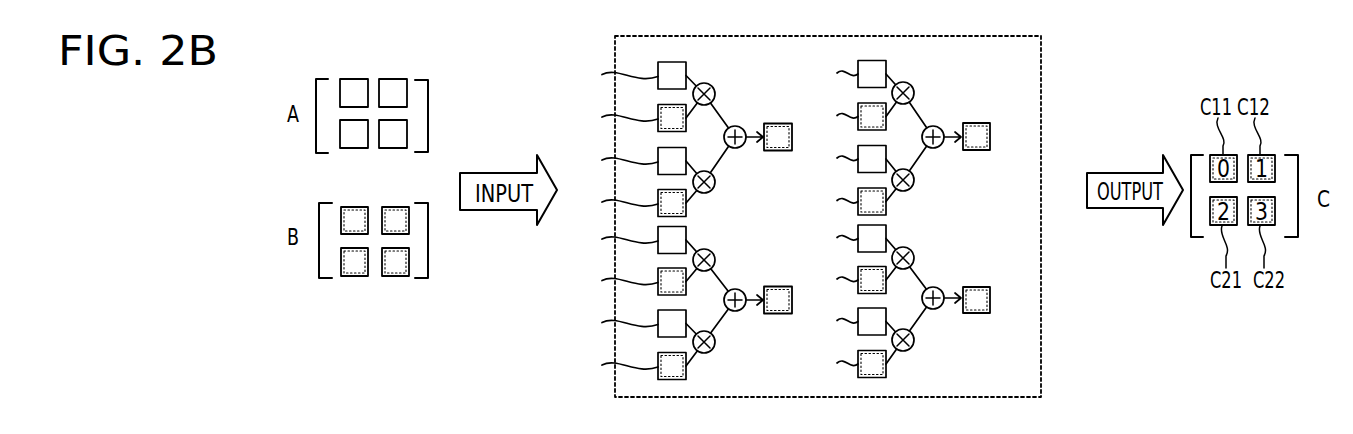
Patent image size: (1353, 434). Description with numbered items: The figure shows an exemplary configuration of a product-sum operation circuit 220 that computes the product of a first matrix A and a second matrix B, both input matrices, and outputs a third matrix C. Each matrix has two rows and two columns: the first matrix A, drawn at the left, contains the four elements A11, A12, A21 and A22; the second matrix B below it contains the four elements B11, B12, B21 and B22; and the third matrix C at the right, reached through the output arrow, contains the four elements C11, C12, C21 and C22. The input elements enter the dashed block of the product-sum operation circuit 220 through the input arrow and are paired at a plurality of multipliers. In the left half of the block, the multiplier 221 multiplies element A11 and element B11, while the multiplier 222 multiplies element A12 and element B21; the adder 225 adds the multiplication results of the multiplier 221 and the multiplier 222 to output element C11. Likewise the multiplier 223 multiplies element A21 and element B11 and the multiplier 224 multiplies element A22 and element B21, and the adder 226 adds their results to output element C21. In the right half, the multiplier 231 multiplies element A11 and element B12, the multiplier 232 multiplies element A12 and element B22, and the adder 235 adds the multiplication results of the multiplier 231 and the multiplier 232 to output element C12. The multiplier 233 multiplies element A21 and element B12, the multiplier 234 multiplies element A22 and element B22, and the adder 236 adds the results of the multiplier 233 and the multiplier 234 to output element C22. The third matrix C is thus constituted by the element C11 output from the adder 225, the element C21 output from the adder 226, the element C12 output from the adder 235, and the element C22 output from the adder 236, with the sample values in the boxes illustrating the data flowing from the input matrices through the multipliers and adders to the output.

The product-sum operation circuit 220 is at (954, 36).
The multiplier 221 is at (712, 84).
The multiplier 222 is at (700, 171).
The multiplier 223 is at (712, 250).
The multiplier 224 is at (700, 331).
The adder 225 is at (738, 126).
The adder 226 is at (738, 289).
The multiplier 231 is at (911, 83).
The multiplier 232 is at (900, 169).
The multiplier 233 is at (911, 248).
The multiplier 234 is at (900, 329).
The adder 235 is at (937, 126).
The adder 236 is at (941, 288).
The element of first matrix A A11 is at (352, 78).
The element of first matrix A A12 is at (391, 78).
The element of first matrix A A21 is at (352, 149).
The element of first matrix A A22 is at (407, 126).
The element of second matrix B B11 is at (356, 206).
The element of second matrix B B12 is at (395, 206).
The element of second matrix B B21 is at (354, 277).
The element of second matrix B B22 is at (396, 277).
The element of third matrix C C11 is at (778, 151).
The element of third matrix C C12 is at (977, 150).
The element of third matrix C C21 is at (778, 314).
The element of third matrix C C22 is at (977, 314).